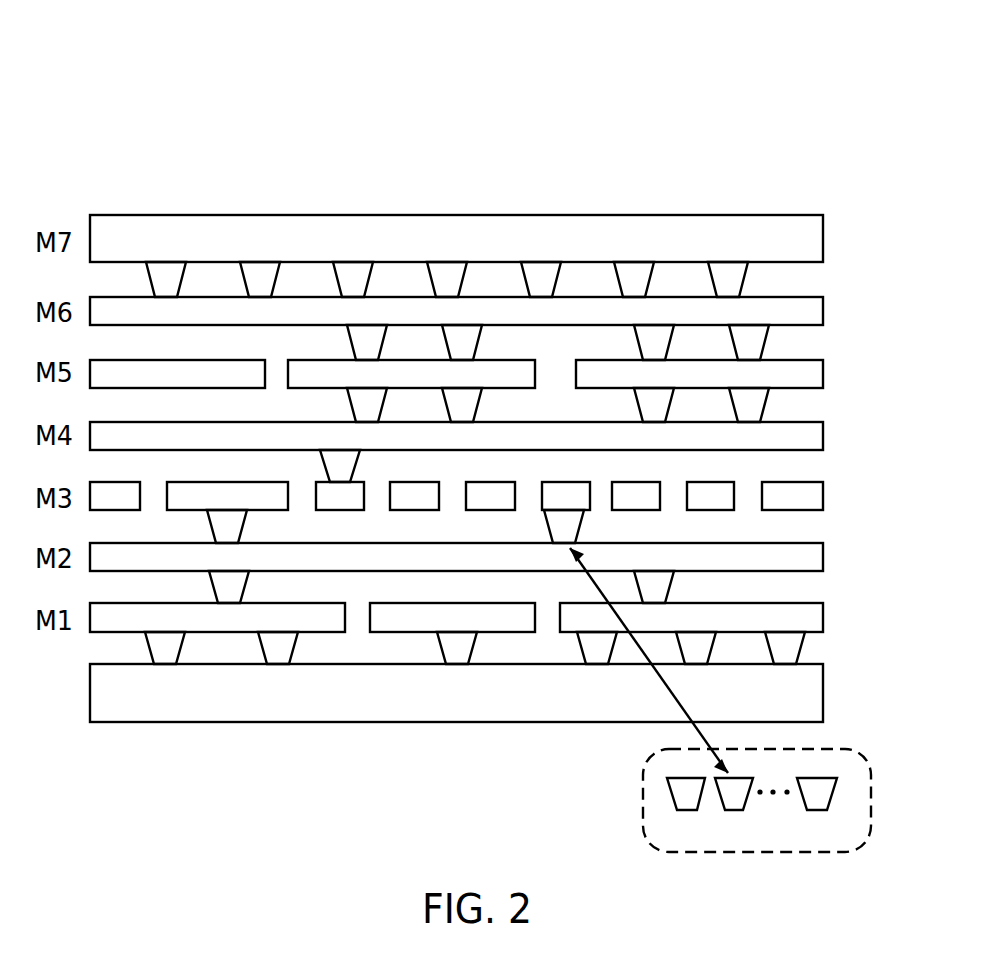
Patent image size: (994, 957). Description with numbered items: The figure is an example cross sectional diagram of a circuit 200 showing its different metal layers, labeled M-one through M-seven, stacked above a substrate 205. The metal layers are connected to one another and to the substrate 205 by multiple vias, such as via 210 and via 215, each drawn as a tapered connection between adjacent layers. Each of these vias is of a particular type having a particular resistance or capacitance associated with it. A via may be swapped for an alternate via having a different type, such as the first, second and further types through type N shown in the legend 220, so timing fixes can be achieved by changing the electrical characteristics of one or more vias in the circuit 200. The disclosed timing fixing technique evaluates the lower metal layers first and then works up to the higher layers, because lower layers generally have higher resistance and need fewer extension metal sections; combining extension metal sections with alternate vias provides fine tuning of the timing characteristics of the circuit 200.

The circuit 200 is at (815, 113).
The substrate 205 is at (427, 693).
The via 210 is at (352, 471).
The via 215 is at (579, 528).
The legend 220 is at (838, 752).